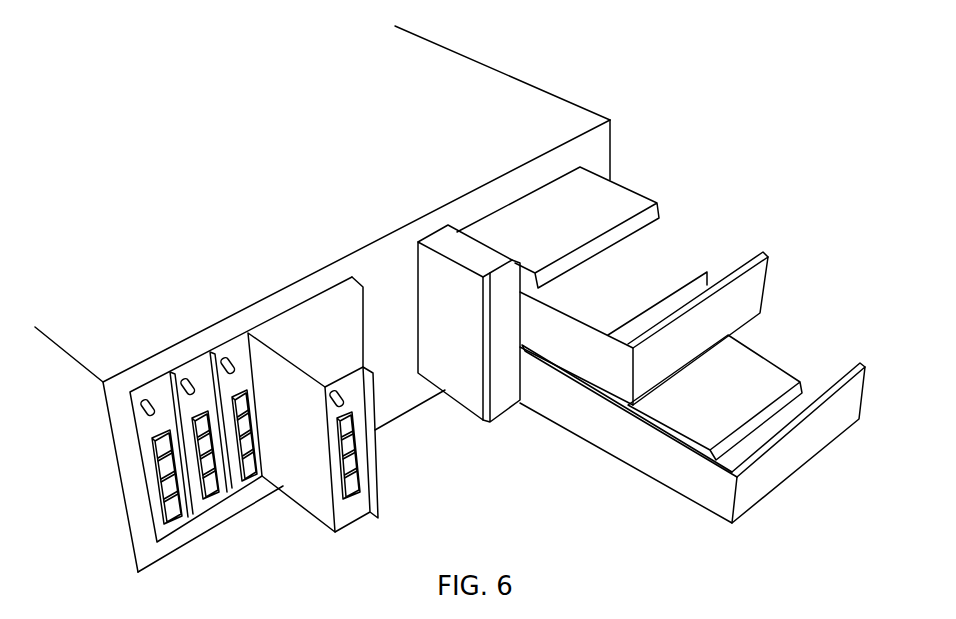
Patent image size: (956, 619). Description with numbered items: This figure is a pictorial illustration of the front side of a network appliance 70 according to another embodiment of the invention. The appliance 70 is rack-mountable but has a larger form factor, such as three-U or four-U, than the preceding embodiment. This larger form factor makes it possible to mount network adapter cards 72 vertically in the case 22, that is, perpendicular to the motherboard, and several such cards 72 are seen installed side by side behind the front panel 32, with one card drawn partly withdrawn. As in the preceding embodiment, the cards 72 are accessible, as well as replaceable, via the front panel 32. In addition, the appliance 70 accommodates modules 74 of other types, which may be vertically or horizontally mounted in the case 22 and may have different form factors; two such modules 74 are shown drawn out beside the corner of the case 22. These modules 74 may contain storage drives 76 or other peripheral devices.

The network appliance 70 is at (781, 114).
The case 22 is at (568, 112).
The front panel 32 is at (608, 153).
The network adapter cards 72 is at (247, 483).
The modules 74 is at (603, 370).
The storage drives 76 is at (677, 264).